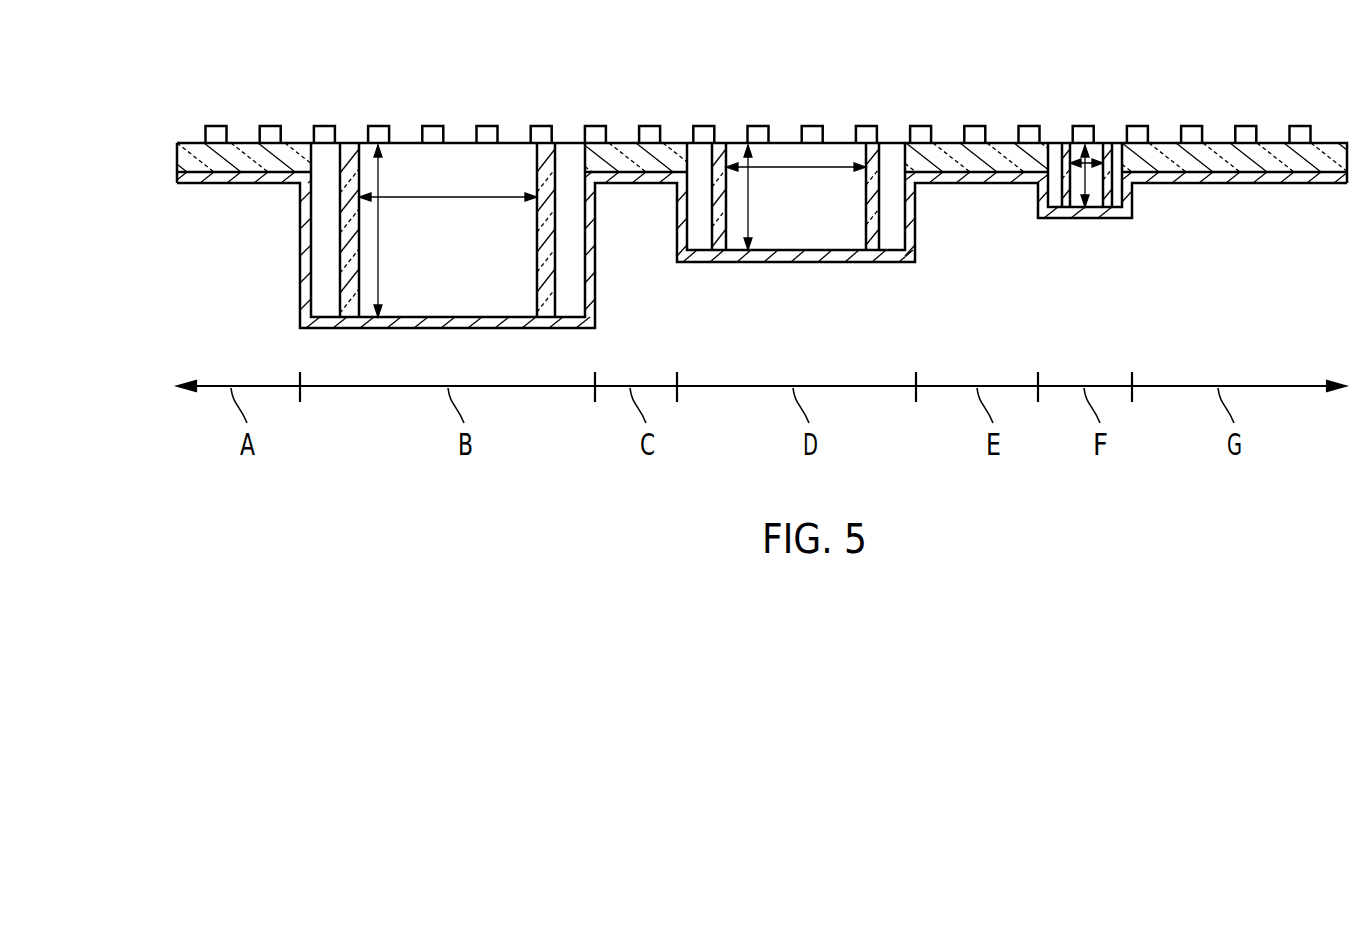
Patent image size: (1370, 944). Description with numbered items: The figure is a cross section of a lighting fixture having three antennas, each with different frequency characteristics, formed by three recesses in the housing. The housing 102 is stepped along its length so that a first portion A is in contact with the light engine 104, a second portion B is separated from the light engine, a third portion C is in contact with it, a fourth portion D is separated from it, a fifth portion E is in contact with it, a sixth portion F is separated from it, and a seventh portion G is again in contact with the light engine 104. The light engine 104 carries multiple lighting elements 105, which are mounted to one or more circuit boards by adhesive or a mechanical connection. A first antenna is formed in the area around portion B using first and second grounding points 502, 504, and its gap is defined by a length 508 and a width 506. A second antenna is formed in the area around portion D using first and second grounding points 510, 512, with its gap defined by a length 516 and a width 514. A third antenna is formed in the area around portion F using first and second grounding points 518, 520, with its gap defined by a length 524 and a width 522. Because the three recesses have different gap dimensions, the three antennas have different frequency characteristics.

The housing 102 is at (210, 201).
The light engine 104 is at (162, 150).
The lighting elements 105 is at (218, 111).
The first grounding point 502 is at (329, 291).
The second grounding point 504 is at (567, 291).
The width 506 is at (380, 277).
The length 508 is at (450, 200).
The first grounding point 510 is at (701, 229).
The second grounding point 512 is at (891, 229).
The width 514 is at (750, 213).
The length 516 is at (830, 168).
The first grounding point 518 is at (1051, 195).
The second grounding point 520 is at (1123, 195).
The width 522 is at (1089, 186).
The length 524 is at (1091, 158).